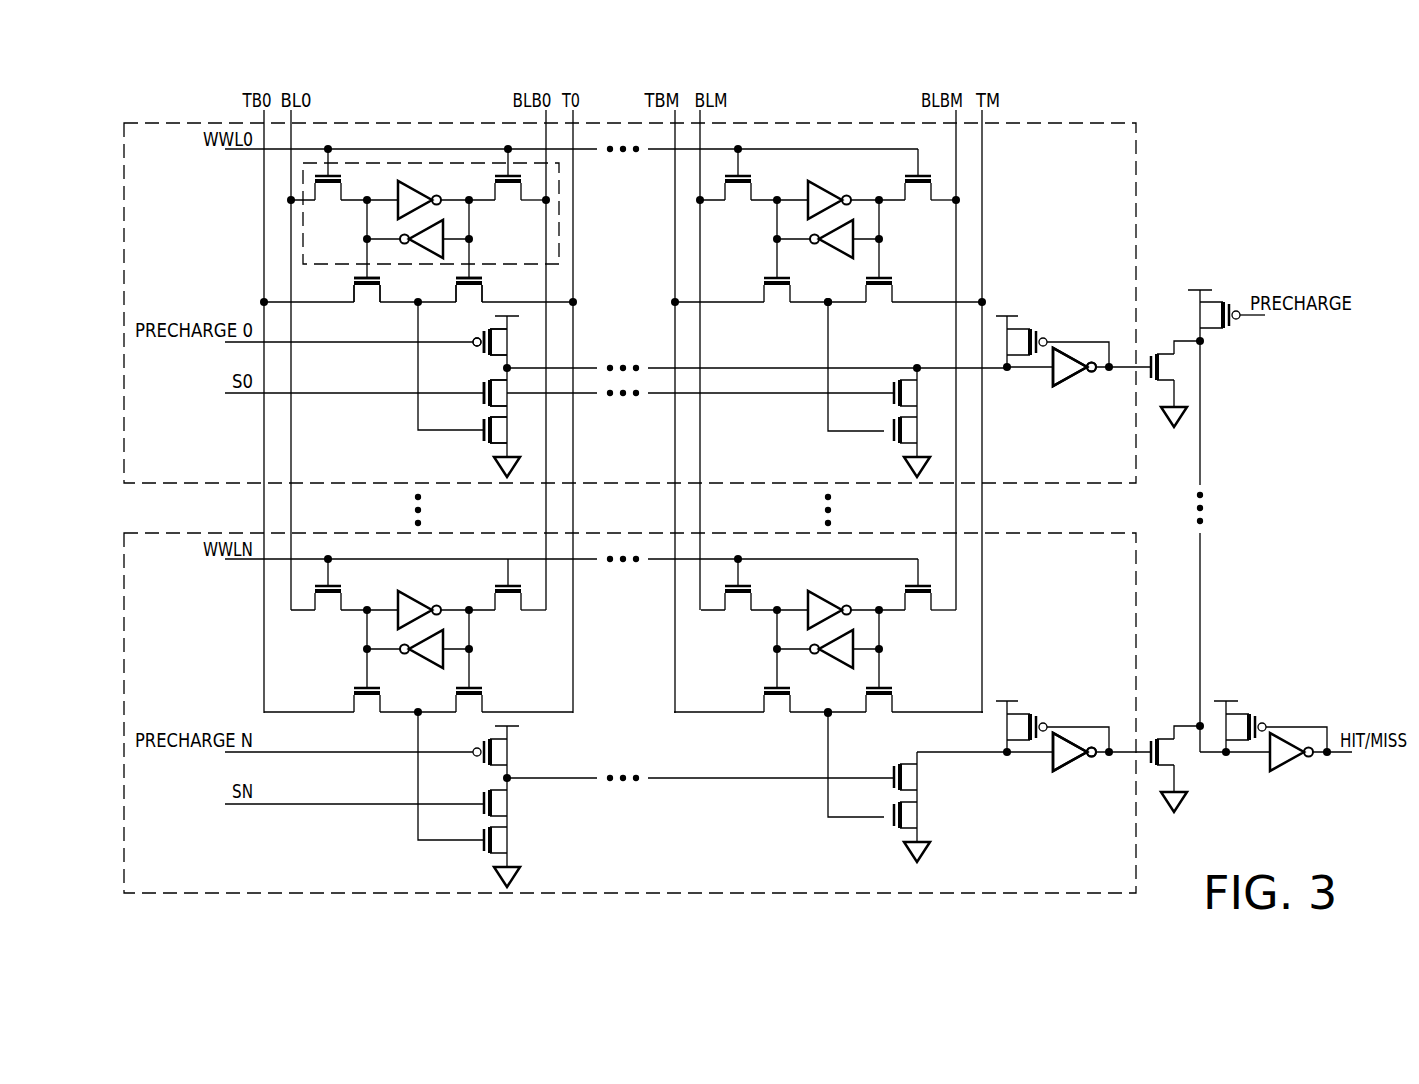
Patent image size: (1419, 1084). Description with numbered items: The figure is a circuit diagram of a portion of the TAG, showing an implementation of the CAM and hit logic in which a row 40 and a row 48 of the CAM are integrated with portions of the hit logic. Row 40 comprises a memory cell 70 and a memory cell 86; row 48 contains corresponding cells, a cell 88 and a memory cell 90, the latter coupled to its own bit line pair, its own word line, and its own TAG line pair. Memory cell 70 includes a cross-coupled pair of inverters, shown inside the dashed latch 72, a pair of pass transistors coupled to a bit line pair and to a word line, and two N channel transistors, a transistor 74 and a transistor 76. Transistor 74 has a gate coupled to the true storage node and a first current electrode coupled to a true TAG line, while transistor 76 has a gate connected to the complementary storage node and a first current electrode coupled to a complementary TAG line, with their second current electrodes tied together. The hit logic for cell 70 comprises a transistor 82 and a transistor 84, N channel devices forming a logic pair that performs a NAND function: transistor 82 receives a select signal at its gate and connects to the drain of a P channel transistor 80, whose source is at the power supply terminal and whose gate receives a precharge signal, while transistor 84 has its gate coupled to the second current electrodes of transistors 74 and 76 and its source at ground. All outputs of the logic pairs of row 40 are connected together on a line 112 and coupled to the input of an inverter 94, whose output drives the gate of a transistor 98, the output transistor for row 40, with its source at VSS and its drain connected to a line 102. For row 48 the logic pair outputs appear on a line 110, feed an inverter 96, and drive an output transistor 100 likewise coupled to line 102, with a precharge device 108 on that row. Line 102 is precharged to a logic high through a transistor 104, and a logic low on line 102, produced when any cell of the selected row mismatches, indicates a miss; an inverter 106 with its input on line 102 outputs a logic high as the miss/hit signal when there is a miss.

The row 40 is at (179, 113).
The row 48 is at (179, 523).
The memory cell 70 is at (254, 216).
The latch (cross-coupled inverters) 72 is at (560, 221).
The transistor 74 is at (368, 303).
The transistor 76 is at (469, 303).
The transistor 80 is at (498, 342).
The transistor 82 is at (481, 380).
The transistor 84 is at (498, 430).
The memory cell 86 is at (664, 216).
The memory cell 88 is at (254, 626).
The memory cell 90 is at (664, 626).
The inverter 94 is at (1081, 375).
The inverter 96 is at (1081, 760).
The transistor 98 is at (1152, 350).
The NMOS transistor 100 is at (1154, 737).
The line 102 is at (1201, 595).
The transistor 104 is at (1226, 333).
The inverter 106 is at (1296, 762).
The PMOS transistor 108 is at (1257, 712).
The line 110 is at (686, 777).
The row match line 112 is at (726, 367).